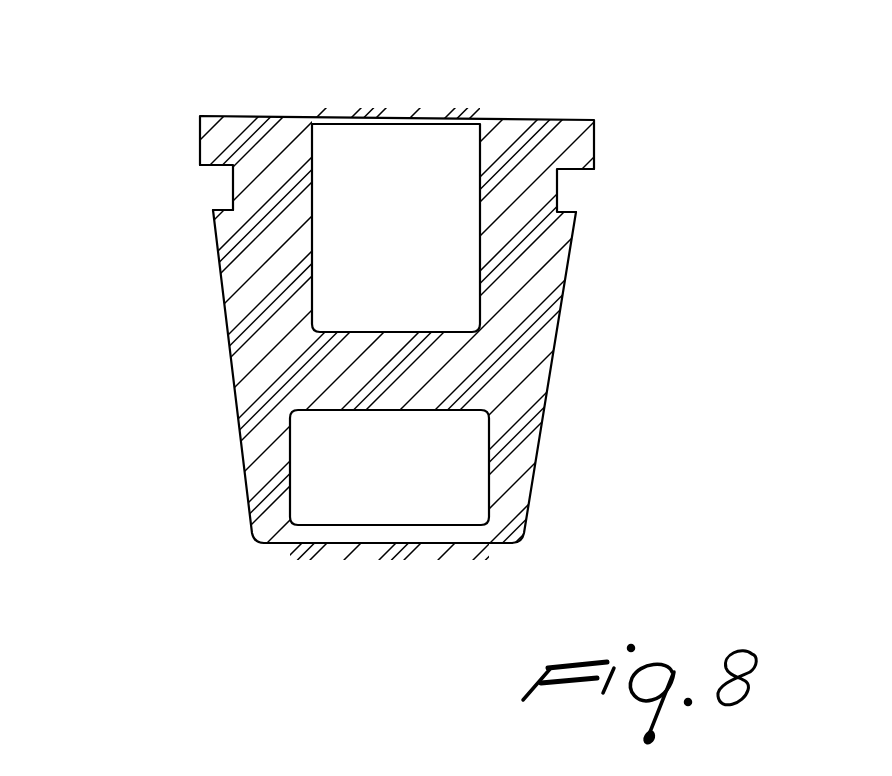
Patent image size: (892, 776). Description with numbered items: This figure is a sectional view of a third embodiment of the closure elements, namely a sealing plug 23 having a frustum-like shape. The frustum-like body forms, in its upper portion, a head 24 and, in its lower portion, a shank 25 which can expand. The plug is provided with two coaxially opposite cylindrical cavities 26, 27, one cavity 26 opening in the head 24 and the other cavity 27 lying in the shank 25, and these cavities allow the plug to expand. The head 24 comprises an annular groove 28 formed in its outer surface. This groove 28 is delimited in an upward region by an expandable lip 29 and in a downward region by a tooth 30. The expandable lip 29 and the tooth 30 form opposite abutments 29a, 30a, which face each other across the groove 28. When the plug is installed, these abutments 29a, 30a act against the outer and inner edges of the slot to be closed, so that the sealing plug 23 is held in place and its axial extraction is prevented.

The sealing plug 23 is at (608, 93).
The head 24 is at (570, 258).
The shank 25 is at (532, 495).
The cylindrical cavity 26 is at (415, 243).
The cylindrical cavity 27 is at (405, 485).
The annular groove 28 is at (559, 191).
The expandable lip 29 is at (203, 132).
The abutment 29a is at (212, 172).
The tooth 30 is at (215, 215).
The abutment 30a is at (225, 204).